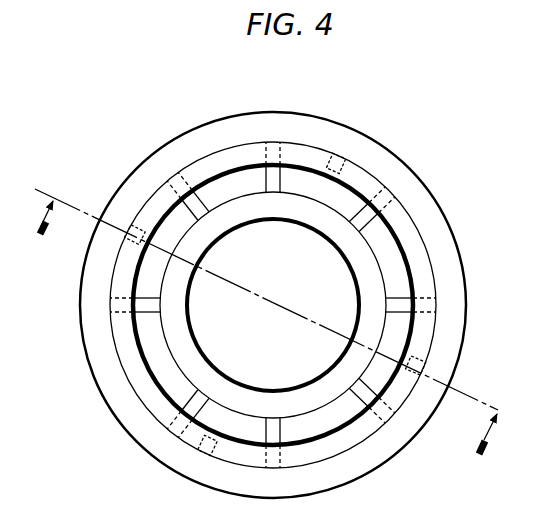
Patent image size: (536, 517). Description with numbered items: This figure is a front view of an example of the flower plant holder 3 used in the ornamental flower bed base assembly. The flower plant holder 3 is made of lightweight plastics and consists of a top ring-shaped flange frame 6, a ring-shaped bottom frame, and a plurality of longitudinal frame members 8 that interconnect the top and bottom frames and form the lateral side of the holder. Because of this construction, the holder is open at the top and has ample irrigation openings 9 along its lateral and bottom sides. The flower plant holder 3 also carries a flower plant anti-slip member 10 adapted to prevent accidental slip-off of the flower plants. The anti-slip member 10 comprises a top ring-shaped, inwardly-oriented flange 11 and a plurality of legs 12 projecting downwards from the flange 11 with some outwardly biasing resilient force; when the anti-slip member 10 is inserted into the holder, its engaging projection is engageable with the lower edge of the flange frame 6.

The flower plant holder 3 is at (358, 128).
The top ring-shaped flange frame 6 is at (383, 167).
The longitudinal frame members 8 is at (272, 180).
The irrigation openings 9 is at (168, 373).
The flower plant anti-slip member 10 is at (420, 223).
The top ring-shaped inwardly-oriented flange 11 is at (422, 268).
The legs 12 is at (428, 357).